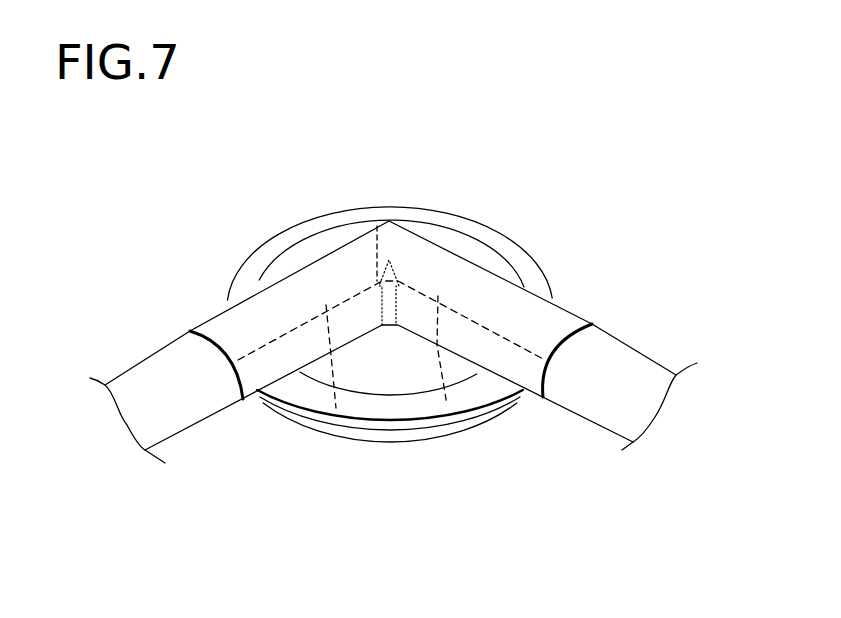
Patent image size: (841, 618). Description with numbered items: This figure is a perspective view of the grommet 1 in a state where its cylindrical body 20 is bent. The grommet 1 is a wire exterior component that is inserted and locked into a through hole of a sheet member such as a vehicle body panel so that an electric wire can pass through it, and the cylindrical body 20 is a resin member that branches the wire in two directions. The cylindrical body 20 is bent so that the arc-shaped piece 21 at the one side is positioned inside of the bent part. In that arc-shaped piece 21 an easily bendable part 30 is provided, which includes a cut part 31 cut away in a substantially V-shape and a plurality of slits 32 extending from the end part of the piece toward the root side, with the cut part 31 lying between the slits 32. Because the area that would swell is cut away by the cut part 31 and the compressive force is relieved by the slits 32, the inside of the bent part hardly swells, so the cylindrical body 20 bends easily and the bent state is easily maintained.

The grommet 1 is at (554, 219).
The cylindrical body 20 is at (257, 313).
The arc-shaped piece at one side 21 is at (498, 345).
The easily bendable part 30 is at (389, 327).
The cut part 31 is at (375, 209).
The slits 32 is at (326, 432).